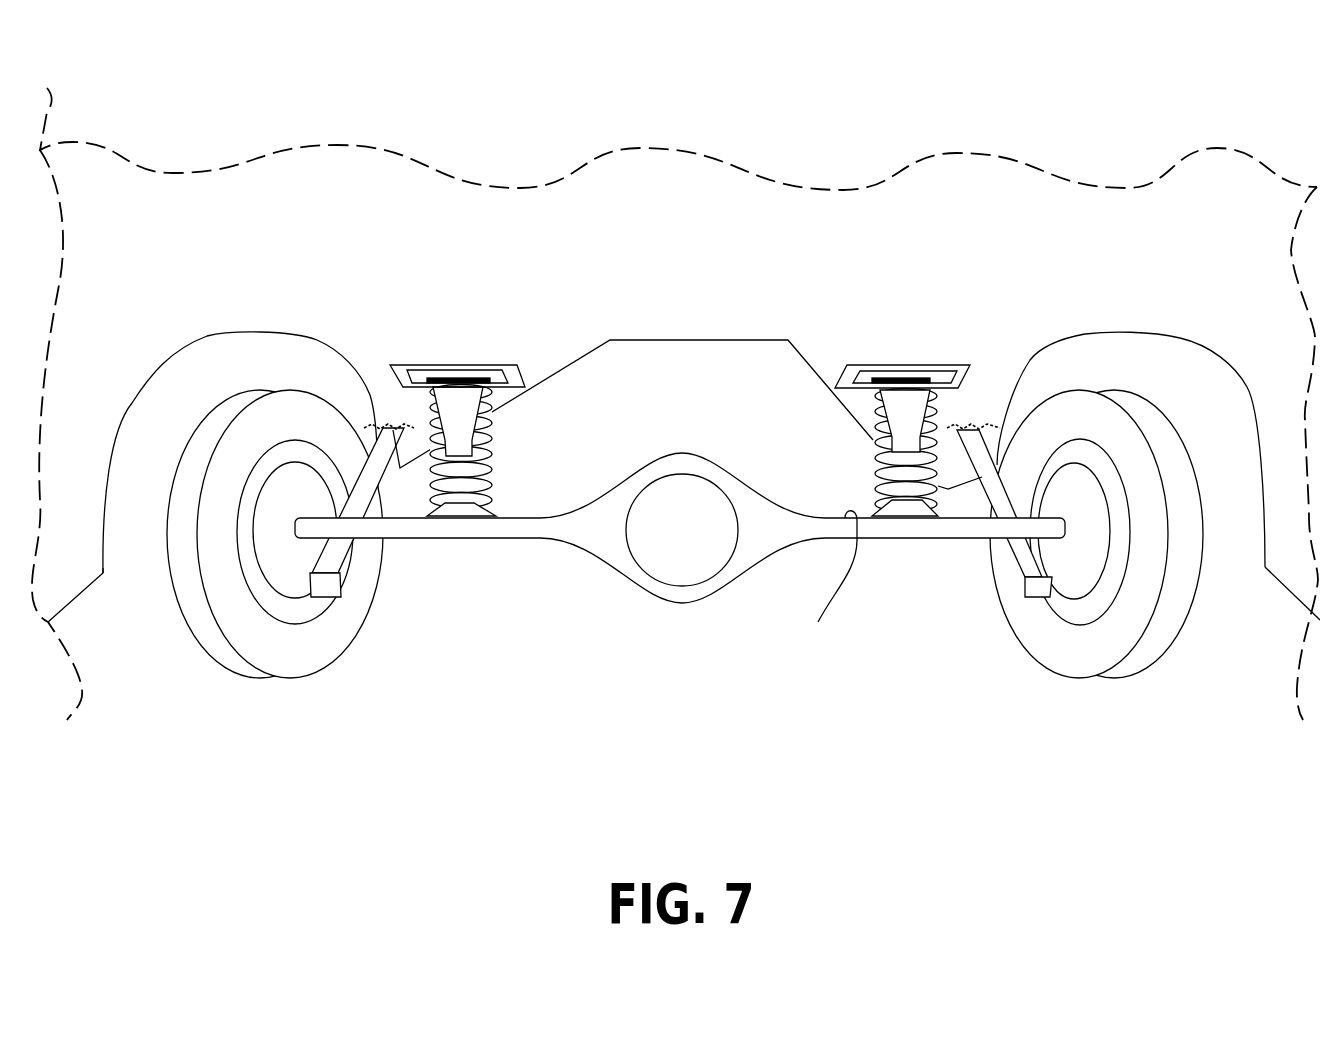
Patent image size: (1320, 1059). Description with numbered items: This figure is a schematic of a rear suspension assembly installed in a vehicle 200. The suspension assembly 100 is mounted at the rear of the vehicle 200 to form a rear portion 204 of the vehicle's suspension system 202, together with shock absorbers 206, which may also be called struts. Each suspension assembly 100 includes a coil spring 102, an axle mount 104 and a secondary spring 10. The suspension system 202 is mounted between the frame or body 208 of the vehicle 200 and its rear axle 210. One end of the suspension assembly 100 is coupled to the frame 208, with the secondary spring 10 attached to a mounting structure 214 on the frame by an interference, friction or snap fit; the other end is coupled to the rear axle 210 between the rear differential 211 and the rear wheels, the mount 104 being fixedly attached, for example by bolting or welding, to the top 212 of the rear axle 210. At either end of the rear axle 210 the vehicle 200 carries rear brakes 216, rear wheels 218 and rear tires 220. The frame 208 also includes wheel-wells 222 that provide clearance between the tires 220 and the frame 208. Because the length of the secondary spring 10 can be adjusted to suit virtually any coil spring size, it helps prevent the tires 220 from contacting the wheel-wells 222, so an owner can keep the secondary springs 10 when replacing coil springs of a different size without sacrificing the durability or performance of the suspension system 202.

The secondary spring 10 is at (902, 412).
The suspension assembly 100 is at (716, 392).
The coil spring 102 is at (877, 473).
The axle mount 104 is at (485, 512).
The vehicle 200 is at (1173, 40).
The suspension system 202 is at (1140, 240).
The rear portion 204 is at (1055, 293).
The shock absorbers 206 is at (982, 477).
The frame or body 208 is at (773, 193).
The rear axle 210 is at (398, 545).
The rear differential 211 is at (672, 562).
The top of the rear axle 212 is at (828, 581).
The mounting structure 214 is at (475, 372).
The rear brakes 216 is at (273, 558).
The rear wheels 218 is at (242, 537).
The rear tires 220 is at (183, 535).
The wheel-wells 222 is at (207, 337).